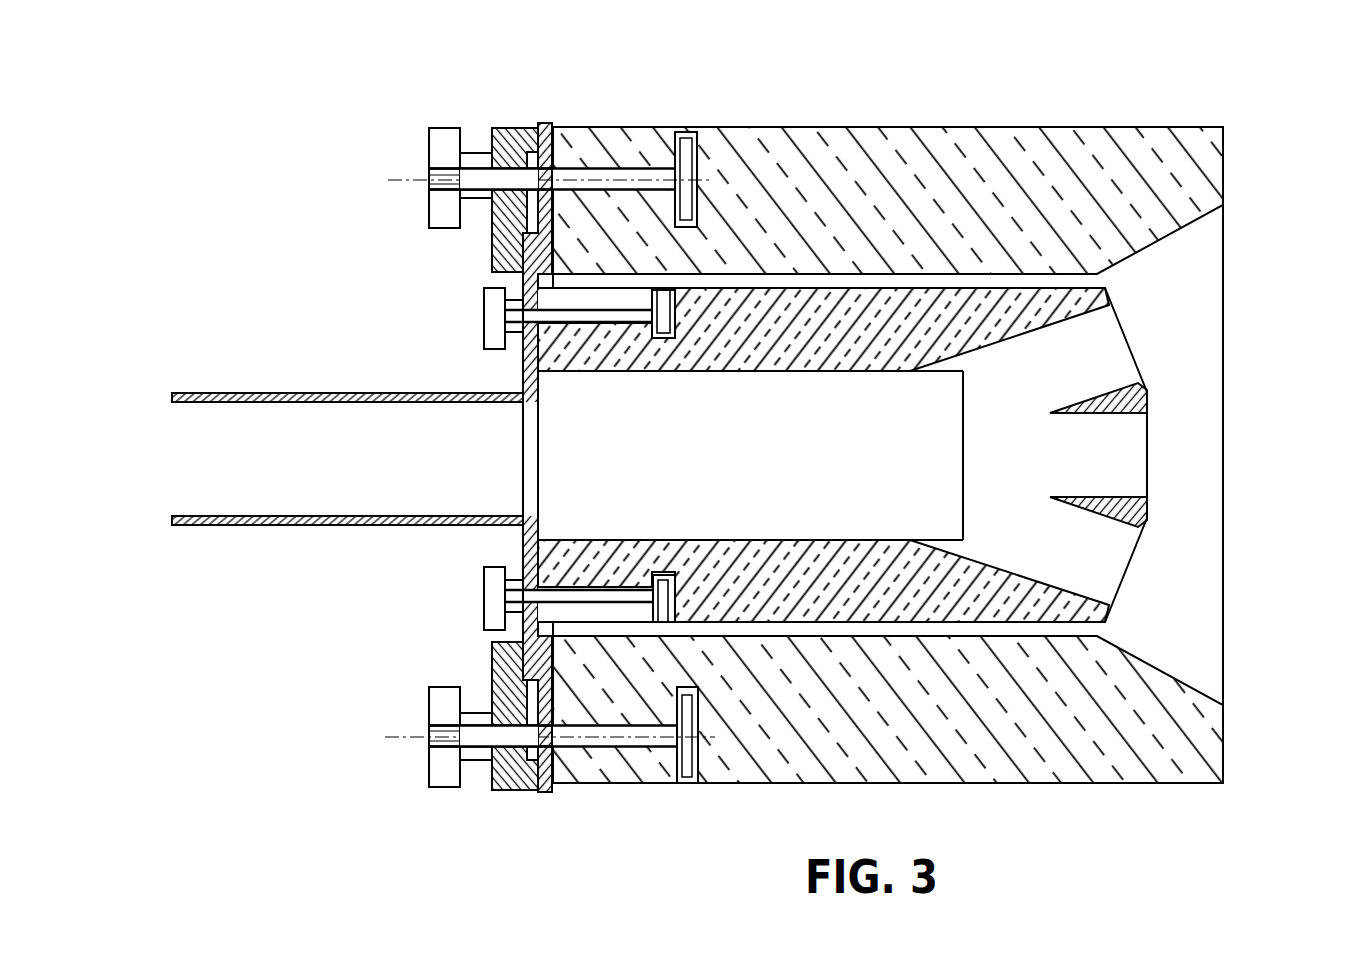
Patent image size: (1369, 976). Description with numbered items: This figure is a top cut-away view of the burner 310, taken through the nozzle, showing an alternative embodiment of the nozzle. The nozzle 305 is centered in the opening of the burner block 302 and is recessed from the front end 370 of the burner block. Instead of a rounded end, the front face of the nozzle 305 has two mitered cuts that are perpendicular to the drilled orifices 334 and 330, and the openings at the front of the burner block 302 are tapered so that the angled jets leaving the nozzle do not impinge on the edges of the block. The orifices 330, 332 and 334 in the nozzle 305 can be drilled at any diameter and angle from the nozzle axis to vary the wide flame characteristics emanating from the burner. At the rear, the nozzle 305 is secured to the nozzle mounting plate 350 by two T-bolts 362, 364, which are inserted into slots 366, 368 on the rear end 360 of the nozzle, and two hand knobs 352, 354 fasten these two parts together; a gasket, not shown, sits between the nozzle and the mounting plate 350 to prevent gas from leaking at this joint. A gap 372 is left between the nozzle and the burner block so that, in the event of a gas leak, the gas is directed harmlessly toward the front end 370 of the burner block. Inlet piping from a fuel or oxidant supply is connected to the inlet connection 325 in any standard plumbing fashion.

The burner block 302 is at (1020, 158).
The nozzle 305 is at (1142, 400).
The burner 310 is at (1264, 98).
The inlet connection 325 is at (347, 510).
The orifice 330 is at (1110, 348).
The orifice 332 is at (1130, 453).
The orifice 334 is at (1113, 565).
The nozzle mounting plate 350 is at (527, 292).
The hand knob 352 is at (493, 337).
The hand knob 354 is at (490, 577).
The rear end of the nozzle 360 is at (294, 352).
The T-bolt 362 is at (662, 293).
The T-bolt 364 is at (660, 608).
The slot 366 is at (673, 312).
The slot 368 is at (672, 607).
The front end of the burner block 370 is at (1247, 462).
The gap 372 is at (808, 285).